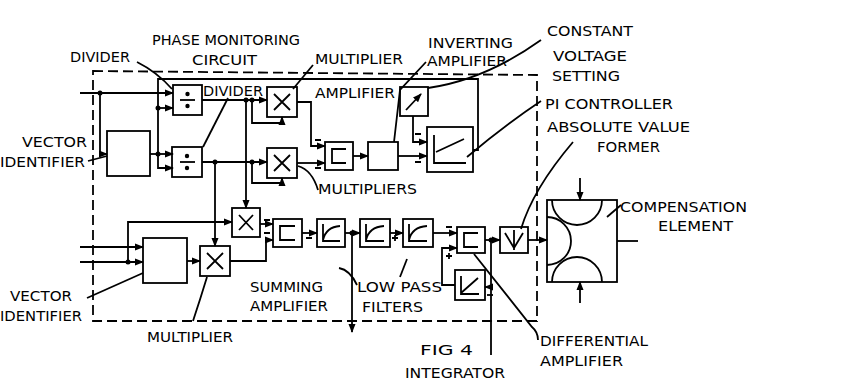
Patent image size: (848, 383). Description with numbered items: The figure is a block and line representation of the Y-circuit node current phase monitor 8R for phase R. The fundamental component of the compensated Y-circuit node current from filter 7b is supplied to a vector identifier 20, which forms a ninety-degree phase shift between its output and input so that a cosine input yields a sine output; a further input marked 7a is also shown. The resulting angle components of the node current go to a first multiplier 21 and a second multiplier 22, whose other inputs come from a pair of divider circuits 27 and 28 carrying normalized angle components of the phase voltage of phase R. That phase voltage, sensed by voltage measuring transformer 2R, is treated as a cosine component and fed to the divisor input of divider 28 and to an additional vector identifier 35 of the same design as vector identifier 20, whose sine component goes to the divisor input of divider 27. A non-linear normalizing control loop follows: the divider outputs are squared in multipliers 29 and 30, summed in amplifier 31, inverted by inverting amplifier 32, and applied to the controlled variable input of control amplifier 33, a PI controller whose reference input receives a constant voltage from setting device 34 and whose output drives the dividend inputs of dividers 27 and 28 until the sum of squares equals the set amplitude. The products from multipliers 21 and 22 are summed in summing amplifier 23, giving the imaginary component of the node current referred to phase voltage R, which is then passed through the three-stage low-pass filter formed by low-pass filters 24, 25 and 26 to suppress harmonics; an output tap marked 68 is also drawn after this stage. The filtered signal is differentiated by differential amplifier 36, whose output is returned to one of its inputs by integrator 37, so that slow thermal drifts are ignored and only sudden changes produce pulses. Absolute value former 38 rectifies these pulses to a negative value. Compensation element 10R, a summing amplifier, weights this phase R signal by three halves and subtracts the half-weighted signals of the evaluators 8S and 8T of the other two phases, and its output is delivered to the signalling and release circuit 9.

The voltage measuring transformer 2R is at (115, 119).
The input signal 7a is at (100, 248).
The filter 7b is at (144, 248).
The Y-circuit node current phase monitor 8R is at (262, 71).
The evaluator 8S is at (580, 179).
The evaluator 8T is at (578, 302).
The signalling and release circuit 9 is at (638, 243).
The compensation element 10R is at (616, 200).
The vector identifier 20 is at (160, 283).
The first multiplier 21 is at (208, 276).
The second multiplier 22 is at (233, 209).
The summing amplifier 23 is at (300, 247).
The low-pass filter 24 is at (344, 247).
The low-pass filter 25 is at (388, 247).
The low-pass filter 26 is at (431, 247).
The divider circuit 27 is at (180, 178).
The divider circuit 28 is at (185, 117).
The multiplier 29 is at (298, 112).
The multiplier 30 is at (297, 172).
The summing amplifier 31 is at (347, 141).
The inverting amplifier 32 is at (390, 141).
The control amplifier 33 is at (460, 172).
The setting device 34 is at (428, 100).
The vector identifier 35 is at (136, 130).
The differential amplifier 36 is at (459, 227).
The integrator 37 is at (471, 300).
The absolute value former 38 is at (514, 253).
The output signal 68 is at (348, 294).